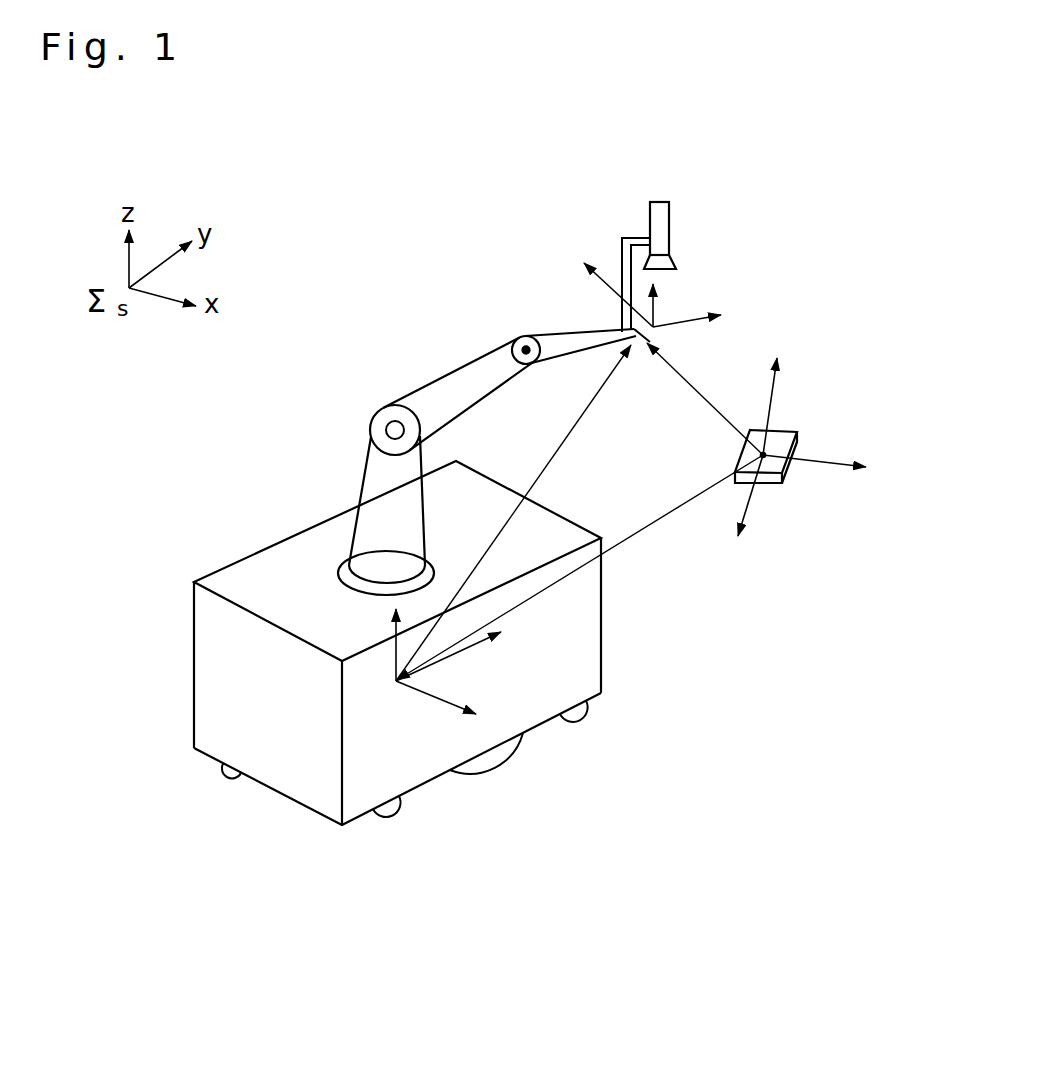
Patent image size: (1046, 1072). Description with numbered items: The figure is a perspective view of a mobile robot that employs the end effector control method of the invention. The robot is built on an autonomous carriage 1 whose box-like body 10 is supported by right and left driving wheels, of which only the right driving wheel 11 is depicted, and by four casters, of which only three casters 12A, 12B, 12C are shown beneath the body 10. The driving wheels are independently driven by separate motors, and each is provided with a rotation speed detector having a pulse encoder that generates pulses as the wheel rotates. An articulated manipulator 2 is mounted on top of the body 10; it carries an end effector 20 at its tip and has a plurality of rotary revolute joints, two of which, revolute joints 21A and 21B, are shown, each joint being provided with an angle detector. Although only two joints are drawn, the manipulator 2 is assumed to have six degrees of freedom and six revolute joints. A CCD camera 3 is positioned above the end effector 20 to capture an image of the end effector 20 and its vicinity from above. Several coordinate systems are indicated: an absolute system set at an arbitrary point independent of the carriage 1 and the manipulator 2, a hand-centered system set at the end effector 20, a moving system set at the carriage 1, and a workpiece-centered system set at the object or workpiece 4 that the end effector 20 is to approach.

The carriage 1 is at (189, 661).
The articulated manipulator 2 is at (485, 371).
The CCD camera 3 is at (669, 218).
The workpiece 4 is at (797, 432).
The box-like body 10 is at (592, 635).
The right driving wheel 11 is at (490, 768).
The caster 12A is at (235, 770).
The caster 12B is at (388, 813).
The caster 12C is at (573, 726).
The end effector 20 is at (630, 325).
The revolute joint 21A is at (379, 425).
The revolute joint 21B is at (517, 340).